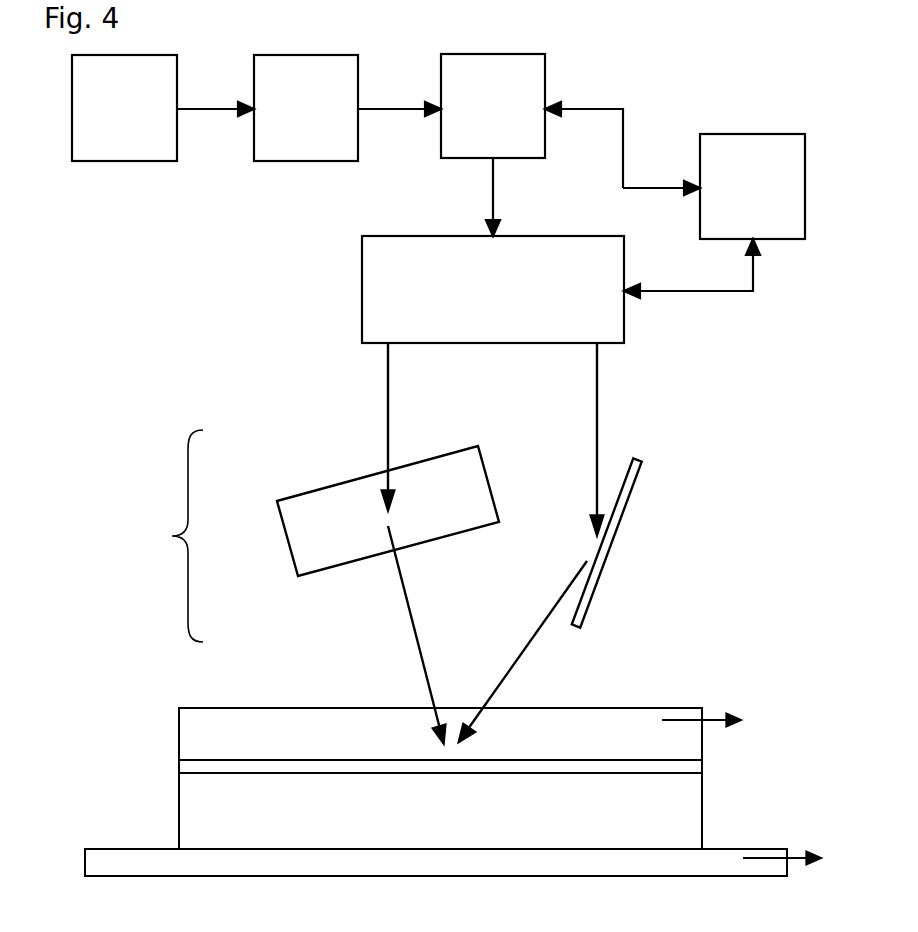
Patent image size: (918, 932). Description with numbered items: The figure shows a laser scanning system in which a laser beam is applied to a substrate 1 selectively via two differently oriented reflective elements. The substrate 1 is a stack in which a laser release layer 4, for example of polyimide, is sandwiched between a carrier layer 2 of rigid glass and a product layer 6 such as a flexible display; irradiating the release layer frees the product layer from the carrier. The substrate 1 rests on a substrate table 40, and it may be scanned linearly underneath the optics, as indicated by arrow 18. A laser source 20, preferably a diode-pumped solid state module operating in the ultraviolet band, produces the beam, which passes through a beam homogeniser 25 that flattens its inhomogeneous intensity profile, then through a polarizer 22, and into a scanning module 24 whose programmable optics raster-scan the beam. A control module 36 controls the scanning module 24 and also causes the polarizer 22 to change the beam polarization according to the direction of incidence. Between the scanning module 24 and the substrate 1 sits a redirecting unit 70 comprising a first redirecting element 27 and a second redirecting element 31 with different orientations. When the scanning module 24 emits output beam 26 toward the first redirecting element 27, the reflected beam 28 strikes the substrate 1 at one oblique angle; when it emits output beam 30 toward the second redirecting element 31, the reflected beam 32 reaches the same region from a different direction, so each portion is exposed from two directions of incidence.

The substrate 1 is at (716, 604).
The carrier layer 2 is at (193, 738).
The laser release layer 4 is at (322, 764).
The product layer 6 is at (200, 815).
The arrow 18 is at (712, 712).
The laser source 20 is at (111, 118).
The polarizer 22 is at (481, 115).
The scanning module 24 is at (480, 297).
The beam homogeniser 25 is at (293, 118).
The output beam 26 is at (392, 409).
The first redirecting element 27 is at (320, 503).
The beam 28 is at (418, 645).
The output beam 30 is at (597, 419).
The second redirecting element 31 is at (610, 536).
The beam 32 is at (546, 614).
The control module 36 is at (740, 198).
The substrate table 40 is at (453, 862).
The redirecting unit 70 is at (171, 536).